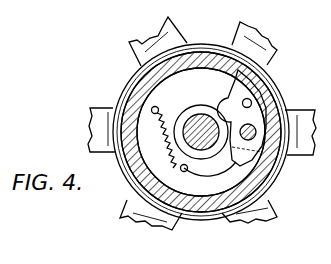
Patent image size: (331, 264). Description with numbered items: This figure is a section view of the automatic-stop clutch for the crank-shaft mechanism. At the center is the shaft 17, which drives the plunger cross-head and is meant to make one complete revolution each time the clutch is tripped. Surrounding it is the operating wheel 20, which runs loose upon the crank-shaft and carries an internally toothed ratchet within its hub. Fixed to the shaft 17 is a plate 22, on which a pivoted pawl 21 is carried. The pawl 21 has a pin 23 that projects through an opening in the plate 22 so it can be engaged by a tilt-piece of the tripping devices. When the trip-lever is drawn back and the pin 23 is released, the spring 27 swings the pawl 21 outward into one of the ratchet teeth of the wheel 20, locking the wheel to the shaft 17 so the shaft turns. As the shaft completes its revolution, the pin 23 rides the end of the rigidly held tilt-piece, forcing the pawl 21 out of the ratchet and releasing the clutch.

The shaft 17 is at (203, 130).
The operating wheel 20 is at (148, 40).
The pivoted pawl 21 is at (268, 150).
The plate 22 is at (175, 100).
The pin 23 is at (272, 95).
The spring 27 is at (162, 140).